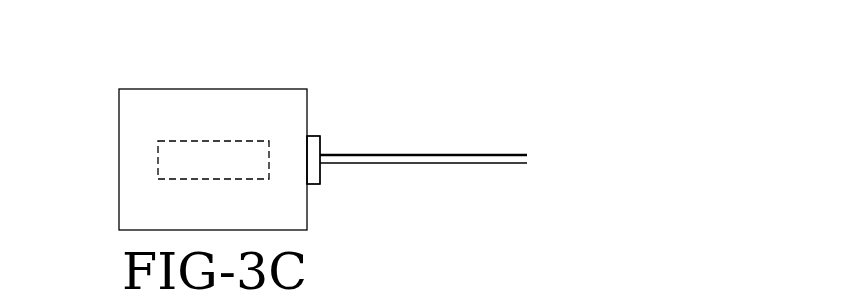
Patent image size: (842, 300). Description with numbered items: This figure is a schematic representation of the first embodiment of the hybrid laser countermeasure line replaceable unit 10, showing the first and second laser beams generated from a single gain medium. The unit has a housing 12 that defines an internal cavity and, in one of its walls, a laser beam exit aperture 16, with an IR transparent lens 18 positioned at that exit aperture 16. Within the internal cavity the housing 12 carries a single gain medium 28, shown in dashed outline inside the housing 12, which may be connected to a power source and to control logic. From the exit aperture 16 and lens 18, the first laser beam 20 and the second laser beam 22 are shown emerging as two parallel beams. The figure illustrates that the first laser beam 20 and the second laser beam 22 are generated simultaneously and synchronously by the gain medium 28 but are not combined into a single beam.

The hybrid laser countermeasure line replaceable unit 10 is at (161, 63).
The housing 12 is at (266, 86).
The single gain medium 28 is at (220, 142).
The laser beam exit aperture 16 is at (323, 138).
The IR transparent lens 18 is at (379, 152).
The first laser beam 20 is at (470, 155).
The second laser beam 22 is at (486, 165).